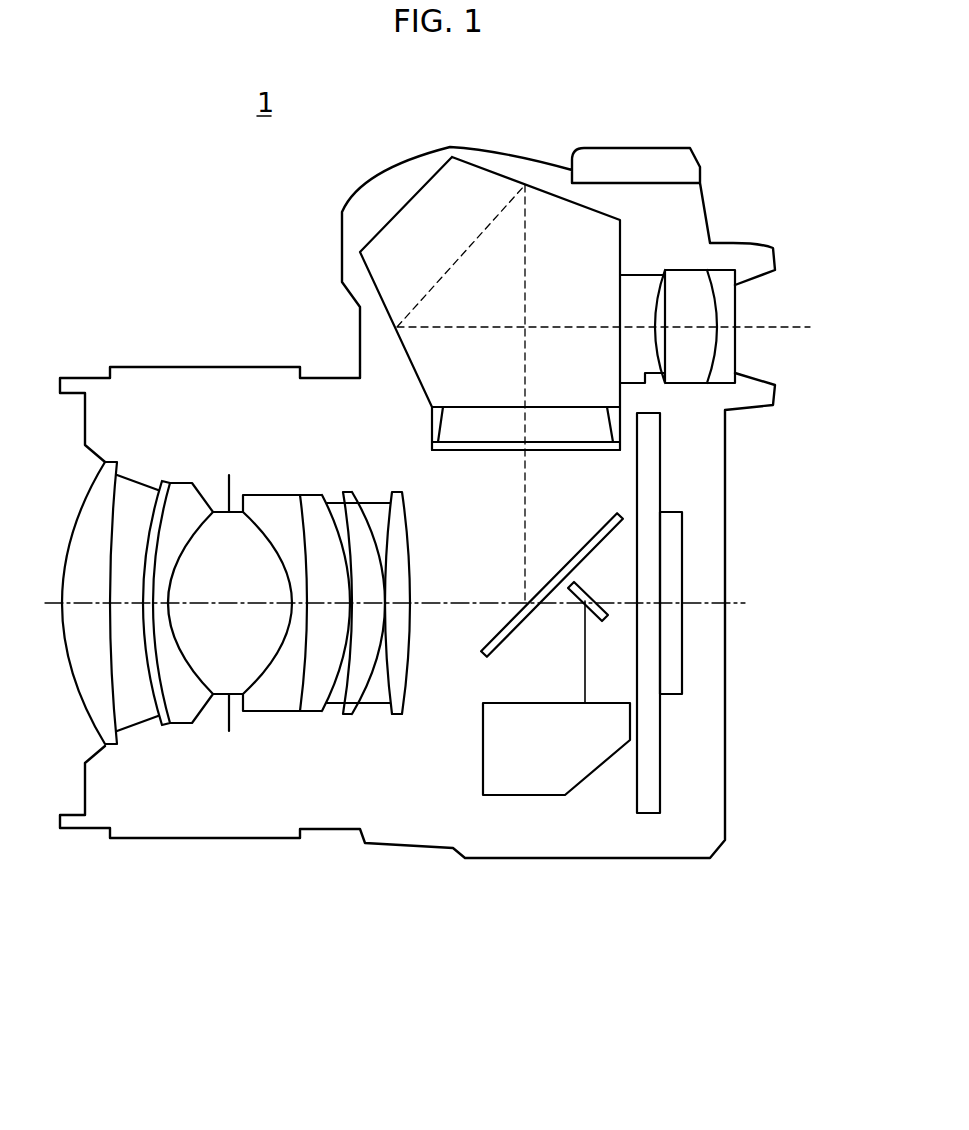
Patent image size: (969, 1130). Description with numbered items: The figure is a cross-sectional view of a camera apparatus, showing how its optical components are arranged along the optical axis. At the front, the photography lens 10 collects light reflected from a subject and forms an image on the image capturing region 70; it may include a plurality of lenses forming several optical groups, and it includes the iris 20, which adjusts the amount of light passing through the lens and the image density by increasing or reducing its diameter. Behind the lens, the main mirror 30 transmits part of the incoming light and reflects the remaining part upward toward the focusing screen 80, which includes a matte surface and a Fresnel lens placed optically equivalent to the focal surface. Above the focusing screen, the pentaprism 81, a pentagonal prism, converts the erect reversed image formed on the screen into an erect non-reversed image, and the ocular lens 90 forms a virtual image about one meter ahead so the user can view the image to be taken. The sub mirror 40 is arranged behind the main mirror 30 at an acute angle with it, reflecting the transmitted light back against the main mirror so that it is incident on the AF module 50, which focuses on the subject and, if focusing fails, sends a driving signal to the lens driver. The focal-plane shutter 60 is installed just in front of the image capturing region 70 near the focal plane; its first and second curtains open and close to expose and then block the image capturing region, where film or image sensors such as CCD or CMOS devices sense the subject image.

The photography lens 10 is at (130, 356).
The iris 20 is at (238, 478).
The main mirror 30 is at (603, 518).
The sub mirror 40 is at (588, 590).
The Auto Focusing (AF) module 50 is at (543, 797).
The focal-plane shutter 60 is at (660, 753).
The image capturing region 70 is at (682, 622).
The focusing screen 80 is at (588, 453).
The pentaprism 81 is at (488, 168).
The ocular lens 90 is at (757, 306).